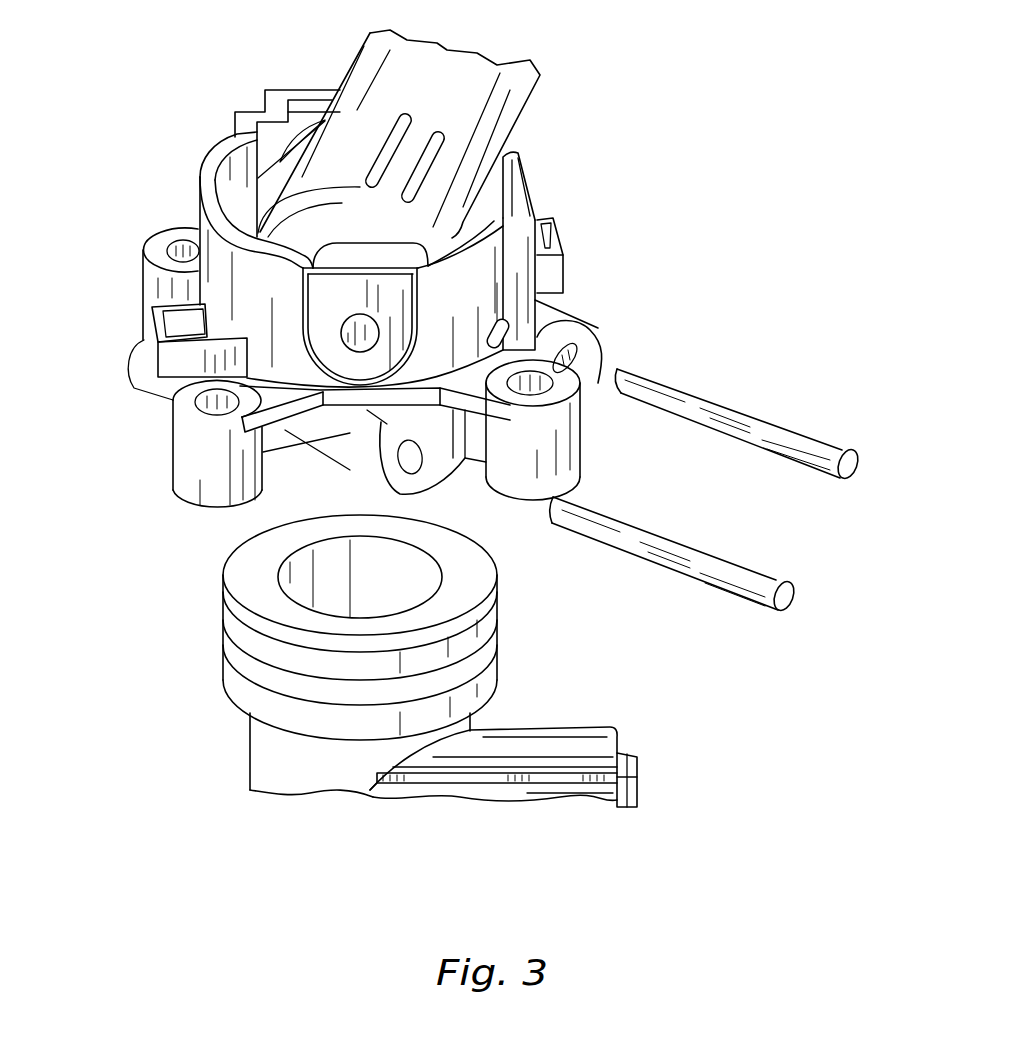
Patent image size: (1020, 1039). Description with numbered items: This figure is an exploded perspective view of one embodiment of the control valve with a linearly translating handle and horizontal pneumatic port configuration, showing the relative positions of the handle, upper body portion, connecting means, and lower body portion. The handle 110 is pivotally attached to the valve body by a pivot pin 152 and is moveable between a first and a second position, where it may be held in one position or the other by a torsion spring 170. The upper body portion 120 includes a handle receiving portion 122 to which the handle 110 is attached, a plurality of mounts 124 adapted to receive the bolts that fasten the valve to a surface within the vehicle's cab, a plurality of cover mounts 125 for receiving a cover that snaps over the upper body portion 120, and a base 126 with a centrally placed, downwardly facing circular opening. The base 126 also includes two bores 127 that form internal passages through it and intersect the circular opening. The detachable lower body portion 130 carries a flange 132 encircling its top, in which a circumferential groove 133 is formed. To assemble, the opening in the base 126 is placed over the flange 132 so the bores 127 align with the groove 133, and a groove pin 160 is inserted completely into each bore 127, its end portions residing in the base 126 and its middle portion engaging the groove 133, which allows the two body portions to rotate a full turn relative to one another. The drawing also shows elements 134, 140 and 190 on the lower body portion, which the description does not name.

The handle 110 is at (513, 103).
The upper body portion 120 is at (612, 146).
The handle receiving portion 122 is at (200, 178).
The mounts 124 is at (177, 462).
The cover mounts 125 is at (563, 250).
The base 126 is at (352, 448).
The bores 127 is at (573, 352).
The lower body portion 130 is at (217, 782).
The flange 132 is at (224, 603).
The groove 133 is at (275, 682).
The tube 134 is at (617, 770).
The guide track 140 is at (493, 780).
The pivot pin 152 is at (353, 333).
The groove pins 160 is at (727, 408).
The torsion spring 170 is at (302, 130).
The end cap 190 is at (637, 777).